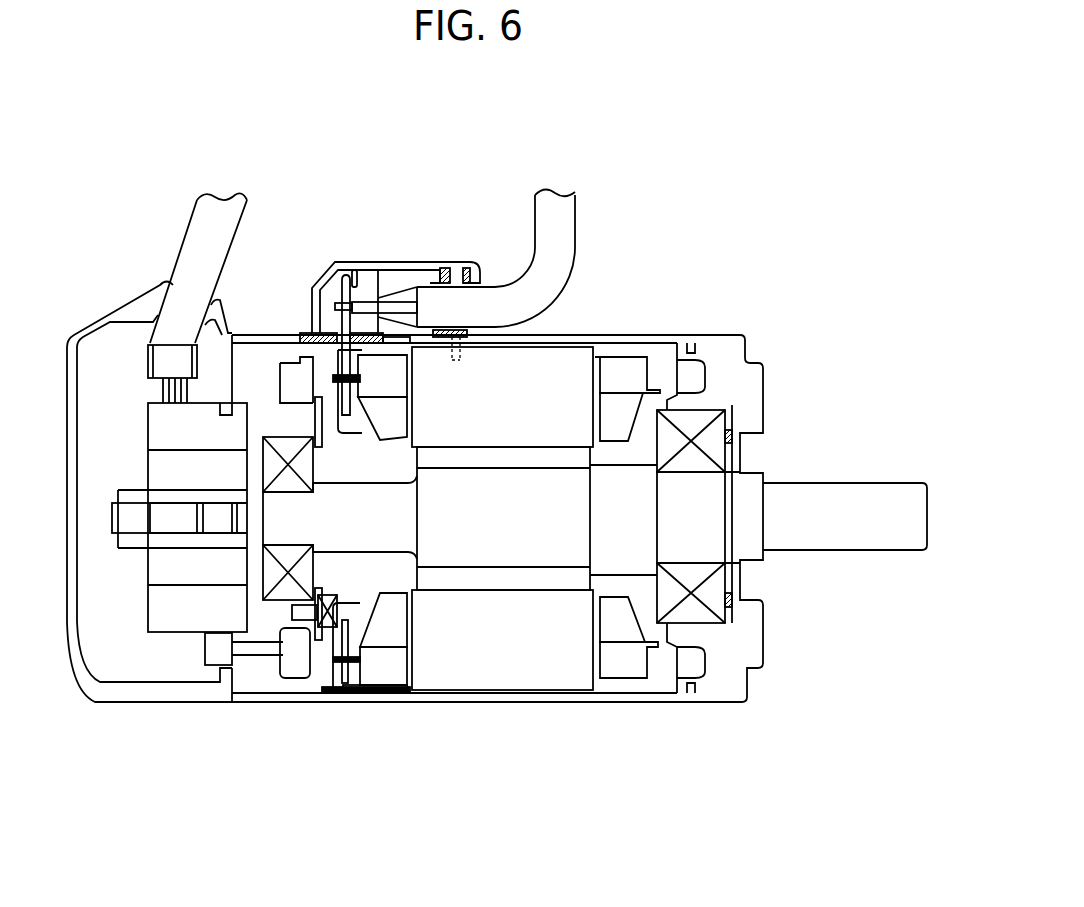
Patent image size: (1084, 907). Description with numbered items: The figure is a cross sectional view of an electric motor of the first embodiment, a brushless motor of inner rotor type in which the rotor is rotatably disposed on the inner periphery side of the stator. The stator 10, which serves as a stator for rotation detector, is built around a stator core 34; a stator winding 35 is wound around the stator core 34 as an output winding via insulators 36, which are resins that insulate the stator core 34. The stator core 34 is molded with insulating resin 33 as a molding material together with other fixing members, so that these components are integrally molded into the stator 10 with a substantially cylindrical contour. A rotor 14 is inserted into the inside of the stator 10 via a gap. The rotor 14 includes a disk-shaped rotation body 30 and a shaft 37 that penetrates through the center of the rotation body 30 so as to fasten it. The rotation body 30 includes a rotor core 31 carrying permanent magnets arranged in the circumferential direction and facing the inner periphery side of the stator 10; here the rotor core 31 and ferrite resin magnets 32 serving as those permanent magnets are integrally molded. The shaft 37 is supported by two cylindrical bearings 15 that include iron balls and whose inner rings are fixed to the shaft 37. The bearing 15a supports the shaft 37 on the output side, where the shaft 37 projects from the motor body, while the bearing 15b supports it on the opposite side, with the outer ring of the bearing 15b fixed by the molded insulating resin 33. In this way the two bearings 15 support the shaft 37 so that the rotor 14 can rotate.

The stator 10 is at (720, 352).
The rotor 14 is at (595, 494).
The bearings 15 is at (457, 381).
The bearing on the output side 15a is at (668, 600).
The bearing on the side opposite to the output side 15b is at (270, 437).
The rotation body 30 is at (567, 477).
The rotor core 31 is at (575, 487).
The ferrite resin magnets 32 is at (572, 457).
The insulating resin 33 is at (662, 333).
The stator core 34 is at (562, 367).
The stator winding 35 is at (610, 410).
The insulators 36 is at (390, 670).
The shaft 37 is at (792, 516).